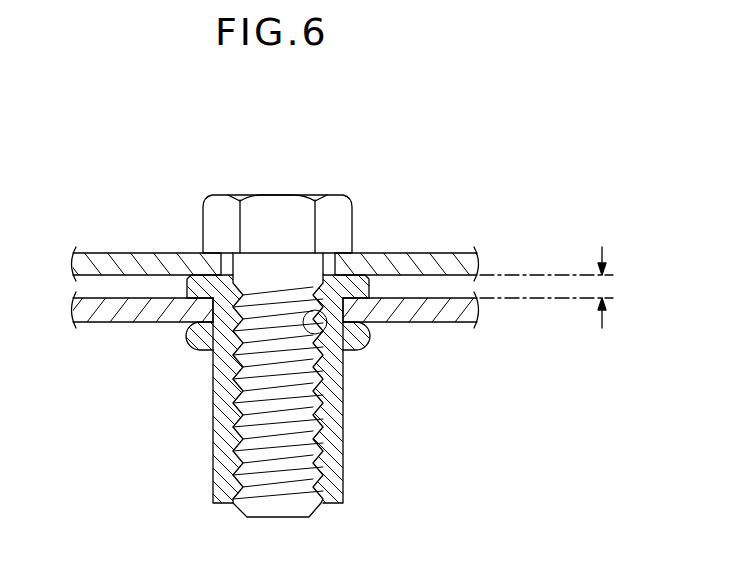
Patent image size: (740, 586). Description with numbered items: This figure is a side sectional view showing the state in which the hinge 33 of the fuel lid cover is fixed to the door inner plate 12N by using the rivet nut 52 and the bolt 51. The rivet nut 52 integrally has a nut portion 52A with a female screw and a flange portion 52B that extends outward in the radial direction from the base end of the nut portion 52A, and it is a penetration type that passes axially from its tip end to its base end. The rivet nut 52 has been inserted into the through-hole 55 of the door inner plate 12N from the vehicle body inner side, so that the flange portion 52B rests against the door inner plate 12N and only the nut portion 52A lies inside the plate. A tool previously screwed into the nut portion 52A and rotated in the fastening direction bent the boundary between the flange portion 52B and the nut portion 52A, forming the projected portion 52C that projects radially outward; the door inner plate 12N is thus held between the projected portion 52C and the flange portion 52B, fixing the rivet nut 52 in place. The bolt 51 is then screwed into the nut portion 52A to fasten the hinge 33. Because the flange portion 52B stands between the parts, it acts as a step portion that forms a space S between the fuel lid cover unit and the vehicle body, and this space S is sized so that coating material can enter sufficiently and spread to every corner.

The bolt 51 is at (282, 215).
The rivet nut 52 is at (341, 293).
The nut portion 52A is at (340, 442).
The flange portion 52B is at (370, 290).
The projected portion 52C is at (190, 338).
The through-hole 55 is at (327, 341).
The hinge 33 is at (452, 253).
The door inner plate 12N is at (452, 322).
The space S is at (554, 287).